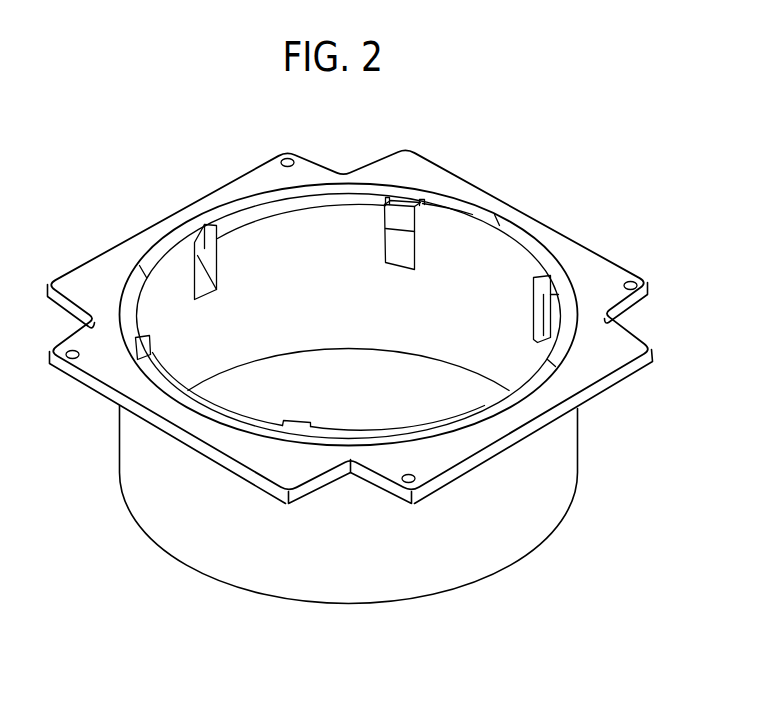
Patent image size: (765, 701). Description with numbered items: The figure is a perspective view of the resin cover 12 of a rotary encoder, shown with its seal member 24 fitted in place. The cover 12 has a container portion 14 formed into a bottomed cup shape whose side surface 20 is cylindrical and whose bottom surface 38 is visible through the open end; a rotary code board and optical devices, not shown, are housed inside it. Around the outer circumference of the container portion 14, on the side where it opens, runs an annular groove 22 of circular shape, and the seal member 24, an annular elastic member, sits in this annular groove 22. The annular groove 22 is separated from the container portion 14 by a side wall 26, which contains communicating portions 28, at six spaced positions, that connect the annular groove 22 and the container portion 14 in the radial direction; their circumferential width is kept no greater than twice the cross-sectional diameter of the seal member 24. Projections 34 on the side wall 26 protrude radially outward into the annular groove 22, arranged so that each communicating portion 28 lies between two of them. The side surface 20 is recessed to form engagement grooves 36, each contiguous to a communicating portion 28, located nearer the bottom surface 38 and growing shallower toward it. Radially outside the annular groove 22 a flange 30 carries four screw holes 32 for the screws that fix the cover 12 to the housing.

The cover 12 is at (466, 138).
The container portion 14 is at (468, 252).
The side surface 20 is at (430, 306).
The annular groove 22 is at (226, 204).
The seal member 24 is at (256, 194).
The side wall 26 is at (524, 256).
The communicating portion 28 is at (392, 194).
The flange 30 is at (598, 352).
The screw hole 32 is at (406, 468).
The projection 34 is at (414, 192).
The engagement groove 36 is at (394, 244).
The bottom surface 38 is at (292, 356).